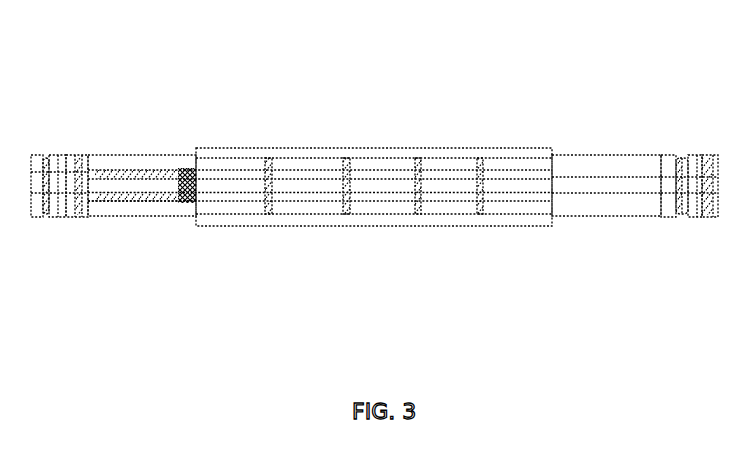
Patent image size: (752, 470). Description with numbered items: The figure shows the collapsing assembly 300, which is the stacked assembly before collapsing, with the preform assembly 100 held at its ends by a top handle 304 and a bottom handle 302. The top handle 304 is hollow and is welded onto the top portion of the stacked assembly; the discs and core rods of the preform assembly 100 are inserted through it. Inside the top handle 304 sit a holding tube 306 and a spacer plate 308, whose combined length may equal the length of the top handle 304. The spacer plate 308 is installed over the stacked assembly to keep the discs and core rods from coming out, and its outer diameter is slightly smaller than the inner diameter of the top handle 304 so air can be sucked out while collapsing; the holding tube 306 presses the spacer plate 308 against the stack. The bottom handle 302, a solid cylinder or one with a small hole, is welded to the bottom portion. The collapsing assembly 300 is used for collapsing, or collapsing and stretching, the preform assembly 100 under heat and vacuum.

The collapsing assembly 300 is at (55, 47).
The top handle 304 is at (177, 157).
The preform assembly 100 is at (348, 147).
The bottom handle 302 is at (575, 163).
The spacer plate 308 is at (182, 195).
The holding tube 306 is at (100, 216).